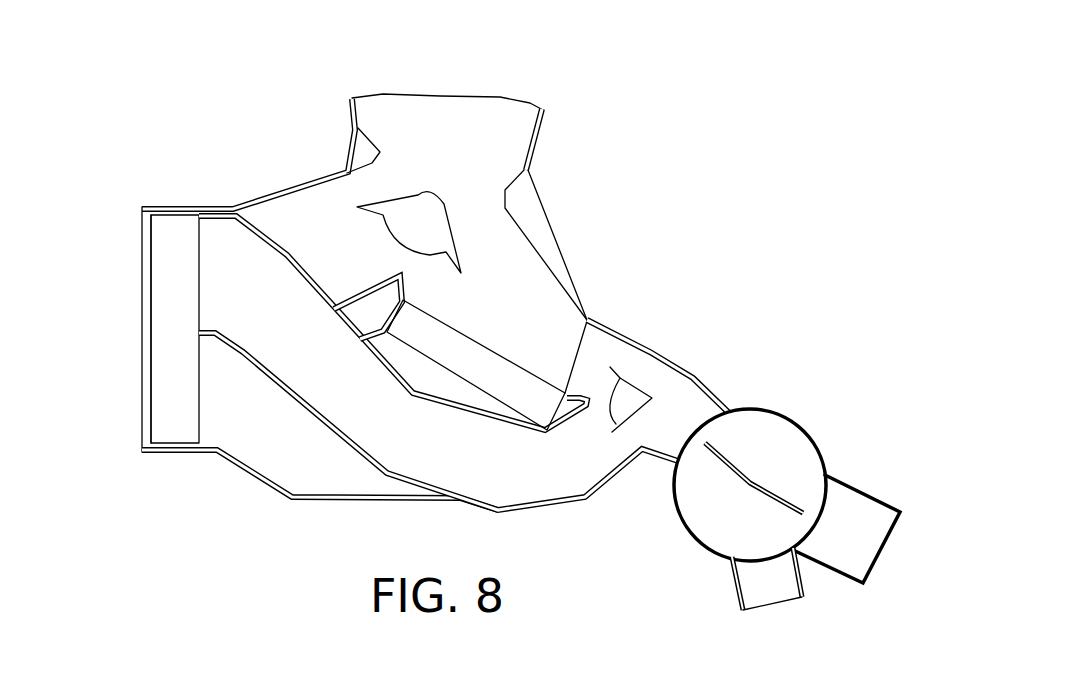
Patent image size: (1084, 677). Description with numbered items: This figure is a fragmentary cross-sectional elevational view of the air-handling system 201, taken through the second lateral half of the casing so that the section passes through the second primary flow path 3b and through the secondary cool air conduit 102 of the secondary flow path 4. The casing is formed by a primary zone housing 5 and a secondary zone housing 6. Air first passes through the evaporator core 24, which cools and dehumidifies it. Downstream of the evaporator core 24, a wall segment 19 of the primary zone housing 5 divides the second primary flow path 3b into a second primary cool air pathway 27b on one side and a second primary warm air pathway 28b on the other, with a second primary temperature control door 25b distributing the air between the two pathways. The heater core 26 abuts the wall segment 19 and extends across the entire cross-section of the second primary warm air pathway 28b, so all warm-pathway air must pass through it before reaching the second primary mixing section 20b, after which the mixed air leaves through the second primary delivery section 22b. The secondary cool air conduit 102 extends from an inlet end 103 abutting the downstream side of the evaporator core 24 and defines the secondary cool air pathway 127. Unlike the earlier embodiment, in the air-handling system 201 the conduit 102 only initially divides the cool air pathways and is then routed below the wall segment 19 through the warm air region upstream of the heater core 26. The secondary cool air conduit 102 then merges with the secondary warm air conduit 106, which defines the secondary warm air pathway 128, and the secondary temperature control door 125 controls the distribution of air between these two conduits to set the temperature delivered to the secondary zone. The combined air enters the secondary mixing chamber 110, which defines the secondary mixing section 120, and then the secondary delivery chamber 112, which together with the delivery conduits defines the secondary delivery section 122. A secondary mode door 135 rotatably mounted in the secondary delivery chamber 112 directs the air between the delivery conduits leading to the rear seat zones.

The air-handling system 201 is at (183, 98).
The primary zone housing 5 is at (208, 190).
The inlet end 103 is at (197, 262).
The evaporator core 24 is at (175, 330).
The wall segment 19 is at (365, 303).
The second primary cool air pathway 27b is at (350, 245).
The second primary mixing section 20b is at (430, 175).
The second primary delivery section 22b is at (464, 113).
The second primary flow path 3b is at (515, 114).
The second primary temperature control door 25b is at (430, 208).
The second primary warm air pathway 28b is at (500, 310).
The heater core 26 is at (490, 372).
The secondary warm air conduit 106 is at (610, 346).
The secondary warm air pathway 128 is at (643, 363).
The secondary flow path 4 is at (658, 349).
The secondary temperature control door 125 is at (632, 398).
The secondary zone housing 6 is at (770, 400).
The secondary delivery chamber 112 is at (795, 460).
The secondary delivery section 122 is at (754, 478).
The secondary mixing chamber 110 is at (661, 414).
The secondary mixing section 120 is at (660, 455).
The secondary mode door 135 is at (769, 502).
The secondary cool air conduit 102 is at (277, 398).
The secondary cool air pathway 127 is at (321, 398).